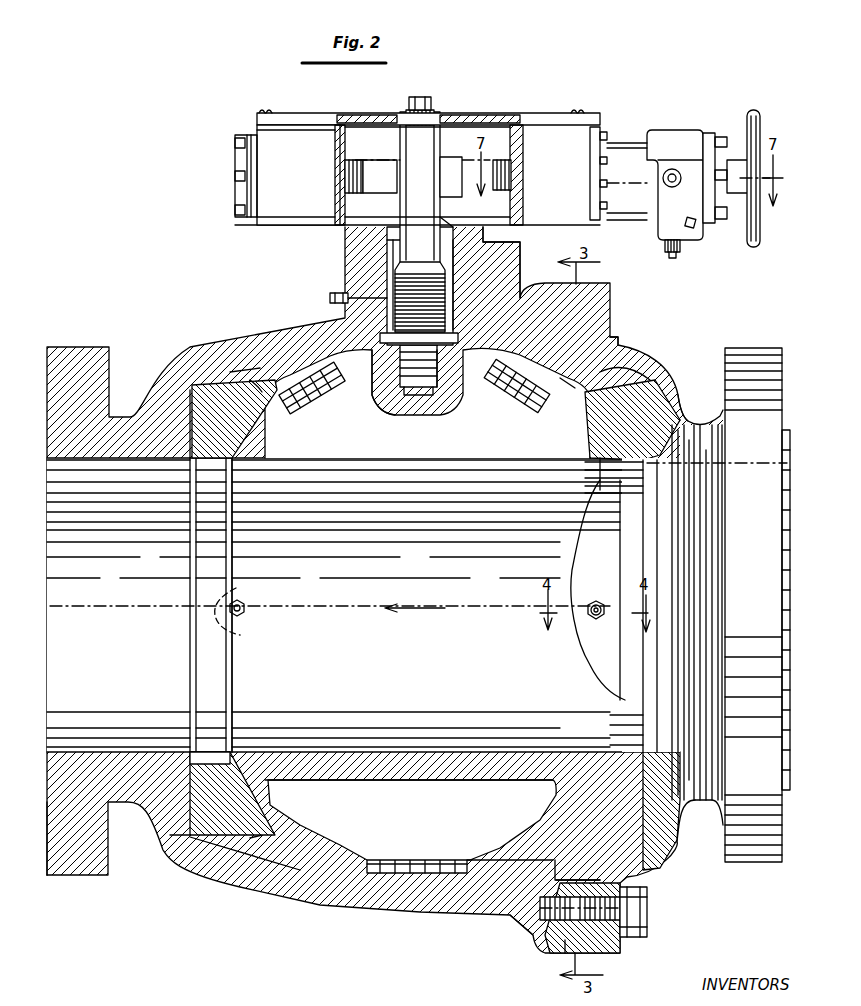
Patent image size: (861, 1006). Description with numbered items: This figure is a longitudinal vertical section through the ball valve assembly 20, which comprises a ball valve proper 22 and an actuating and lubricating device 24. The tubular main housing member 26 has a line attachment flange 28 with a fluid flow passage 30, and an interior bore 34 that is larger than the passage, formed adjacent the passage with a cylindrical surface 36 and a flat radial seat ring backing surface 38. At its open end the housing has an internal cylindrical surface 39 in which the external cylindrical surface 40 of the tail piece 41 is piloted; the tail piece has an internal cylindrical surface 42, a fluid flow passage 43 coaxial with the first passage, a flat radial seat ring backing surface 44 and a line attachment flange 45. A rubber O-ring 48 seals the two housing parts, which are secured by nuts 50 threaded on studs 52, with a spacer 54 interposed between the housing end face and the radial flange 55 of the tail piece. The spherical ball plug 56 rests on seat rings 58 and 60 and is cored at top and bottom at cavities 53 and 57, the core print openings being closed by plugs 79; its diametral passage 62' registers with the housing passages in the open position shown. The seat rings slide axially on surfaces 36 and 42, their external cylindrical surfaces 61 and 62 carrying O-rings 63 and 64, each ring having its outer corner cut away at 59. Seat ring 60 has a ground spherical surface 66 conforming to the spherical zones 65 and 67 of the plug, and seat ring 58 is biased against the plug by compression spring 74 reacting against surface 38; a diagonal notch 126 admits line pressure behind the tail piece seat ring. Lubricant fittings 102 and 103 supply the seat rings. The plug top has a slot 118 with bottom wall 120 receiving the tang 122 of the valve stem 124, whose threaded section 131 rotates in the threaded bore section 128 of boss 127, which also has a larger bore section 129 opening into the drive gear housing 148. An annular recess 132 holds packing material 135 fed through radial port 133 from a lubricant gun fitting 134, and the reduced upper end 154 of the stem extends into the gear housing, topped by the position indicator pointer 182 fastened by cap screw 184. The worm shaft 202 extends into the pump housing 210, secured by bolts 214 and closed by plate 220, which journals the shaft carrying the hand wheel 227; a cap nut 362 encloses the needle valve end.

The ball valve assembly 20 is at (208, 299).
The ball valve proper 22 is at (240, 895).
The actuating and lubricating device 24 is at (513, 113).
The tubular main housing member 26 is at (296, 892).
The line attachment flange 28 is at (58, 878).
The fluid flow passage 30 is at (57, 757).
The interior bore 34 is at (472, 878).
The cylindrical surface 36 is at (200, 842).
The flat radial seat ring backing surface 38 is at (228, 748).
The internal cylindrical surface 39 is at (555, 880).
The external cylindrical surface 40 is at (582, 909).
The tail piece 41 is at (664, 852).
The internal cylindrical surface 42 is at (614, 372).
The fluid flow passage 43 is at (706, 812).
The flat radial seat ring backing surface 44 is at (628, 797).
The line attachment flange 45 is at (752, 868).
The rubber O-ring 48 is at (555, 872).
The nuts 50 is at (642, 905).
The studs 52 is at (533, 934).
The cavity 53 is at (474, 433).
The spacer 54 is at (567, 950).
The radial flange 55 is at (622, 940).
The ball plug 56 is at (278, 429).
The cavity 57 is at (461, 813).
The seat ring 58 is at (205, 392).
The cut-away outer corner 59 is at (192, 840).
The seat ring 60 is at (676, 394).
The external cylindrical surface 61 is at (233, 372).
The external cylindrical surface 62 is at (627, 338).
The diametral passage 62' is at (409, 757).
The O-ring 63 is at (254, 383).
The O-ring 64 is at (568, 386).
The spherical zone 65 is at (653, 477).
The ground spherical surface 66 is at (547, 405).
The spherical zone 67 is at (231, 462).
The compression spring 74 is at (211, 605).
The plugs 79 is at (300, 392).
The fitting 102 is at (598, 603).
The fitting 103 is at (246, 603).
The slot 118 is at (421, 389).
The bottom wall 120 is at (393, 413).
The tang 122 is at (397, 372).
The valve stem 124 is at (406, 134).
The diagonal notch 126 is at (653, 493).
The boss 127 is at (478, 236).
The threaded bore section 128 is at (447, 328).
The bore section 129 is at (443, 220).
The threaded section 131 is at (450, 298).
The annular recess 132 is at (448, 262).
The radial port 133 is at (385, 283).
The lubricant gun fitting 134 is at (325, 297).
The packing material ring 135 is at (388, 268).
The drive gear housing 148 is at (336, 143).
The reduced upper end 154 is at (438, 159).
The position indicator pointer 182 is at (407, 110).
The cap screw 184 is at (419, 100).
The worm shaft 202 is at (368, 168).
The pump housing 210 is at (685, 131).
The bolts 214 is at (606, 132).
The plate 220 is at (712, 138).
The hand wheel 227 is at (762, 118).
The cap nut 362 is at (668, 250).